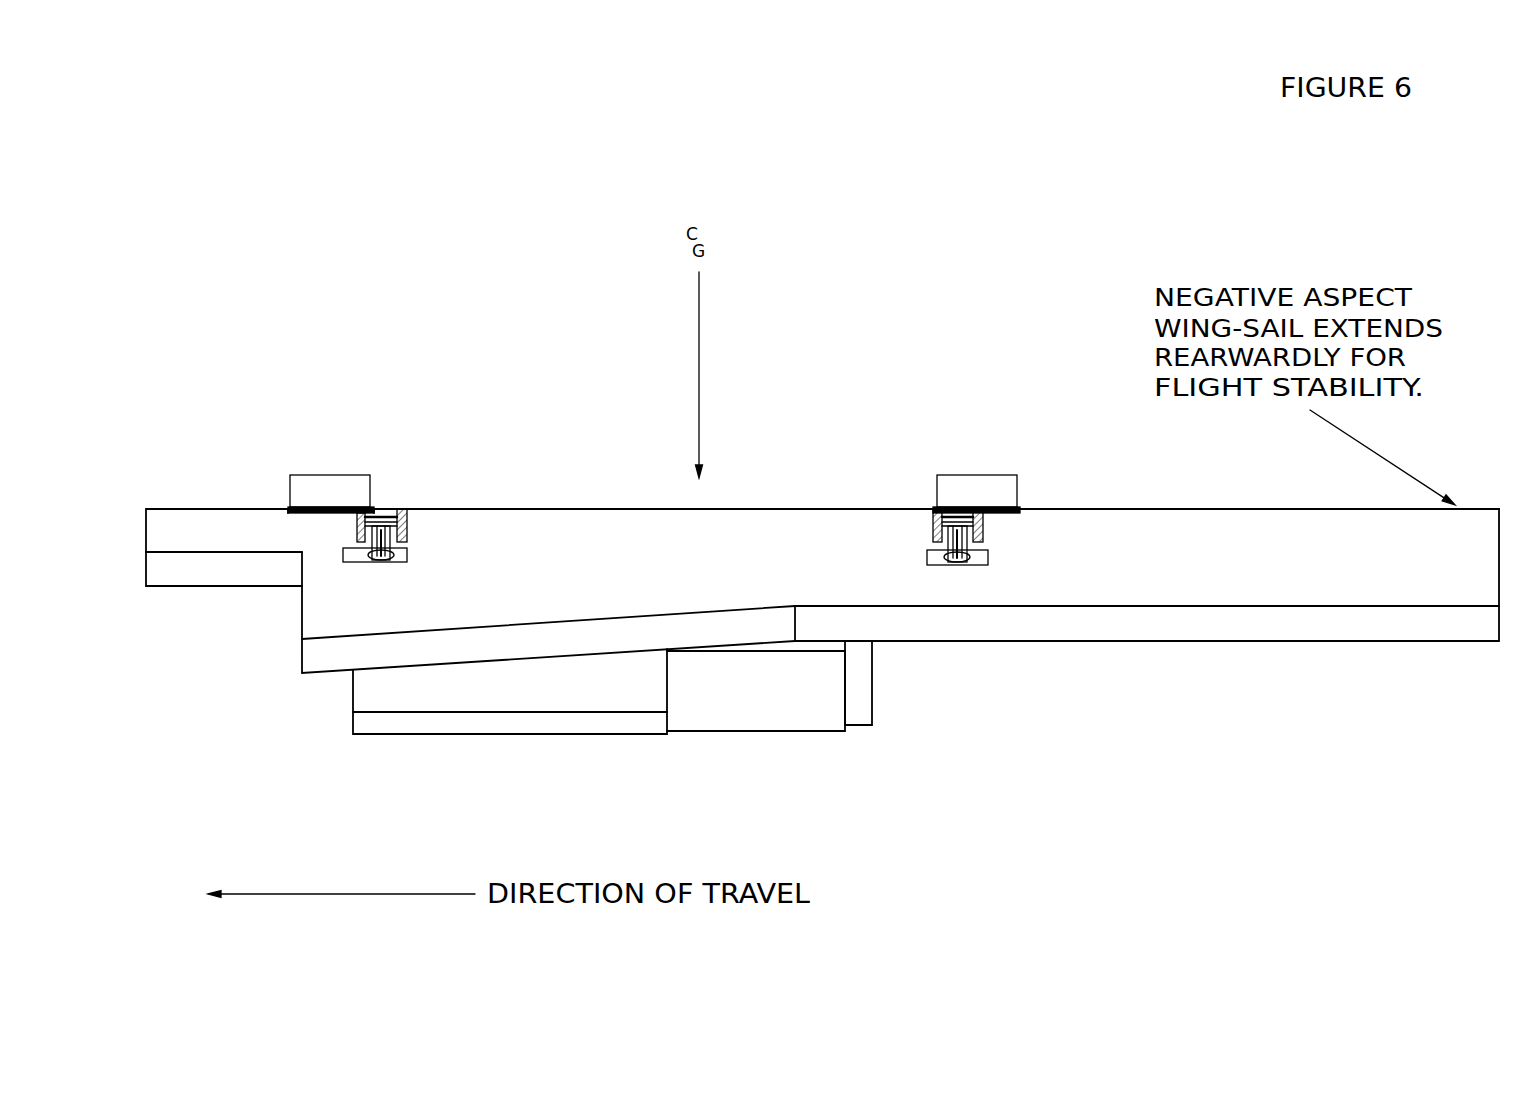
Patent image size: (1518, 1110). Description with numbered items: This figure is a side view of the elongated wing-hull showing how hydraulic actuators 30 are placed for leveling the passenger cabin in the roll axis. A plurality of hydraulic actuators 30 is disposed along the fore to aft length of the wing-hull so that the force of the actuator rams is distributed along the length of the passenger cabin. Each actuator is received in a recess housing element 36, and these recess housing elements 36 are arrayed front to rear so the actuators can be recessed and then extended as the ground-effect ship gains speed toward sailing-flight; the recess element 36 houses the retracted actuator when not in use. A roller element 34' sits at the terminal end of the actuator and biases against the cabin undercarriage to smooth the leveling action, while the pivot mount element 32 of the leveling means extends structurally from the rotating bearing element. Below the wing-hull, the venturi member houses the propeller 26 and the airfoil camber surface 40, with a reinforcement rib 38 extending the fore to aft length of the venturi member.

The propeller 26 is at (887, 719).
The hydraulic actuator 30 is at (404, 554).
The pivot mount element 32 is at (282, 464).
The roller element 34' is at (727, 536).
The recess housing element 36 is at (357, 571).
The reinforcement rib 38 is at (488, 742).
The airfoil camber surface 40 is at (588, 724).